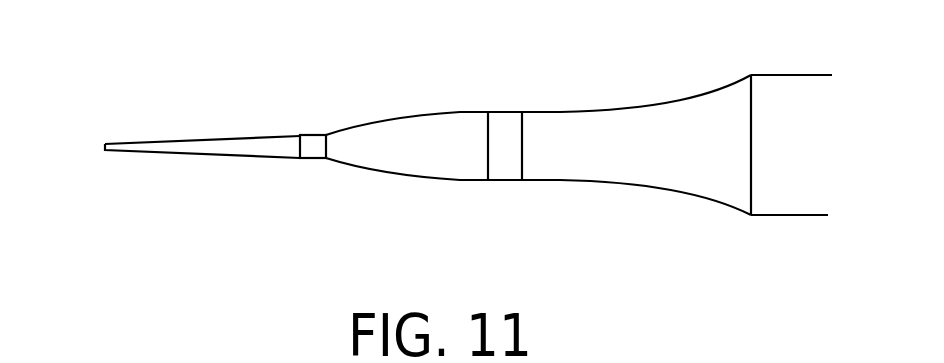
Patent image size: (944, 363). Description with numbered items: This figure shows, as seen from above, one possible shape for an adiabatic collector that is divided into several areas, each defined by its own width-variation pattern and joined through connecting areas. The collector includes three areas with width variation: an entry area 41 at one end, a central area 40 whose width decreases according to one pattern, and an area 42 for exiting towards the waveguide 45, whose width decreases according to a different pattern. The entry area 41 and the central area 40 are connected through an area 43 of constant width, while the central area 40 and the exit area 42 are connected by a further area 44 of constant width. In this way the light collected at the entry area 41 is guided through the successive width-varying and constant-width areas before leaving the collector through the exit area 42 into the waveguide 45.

The central area 40 is at (422, 132).
The entry area 41 is at (218, 146).
The exit area 42 is at (653, 118).
The connecting area with constant width 43 is at (317, 148).
The connecting area with constant width 44 is at (513, 133).
The waveguide 45 is at (785, 88).